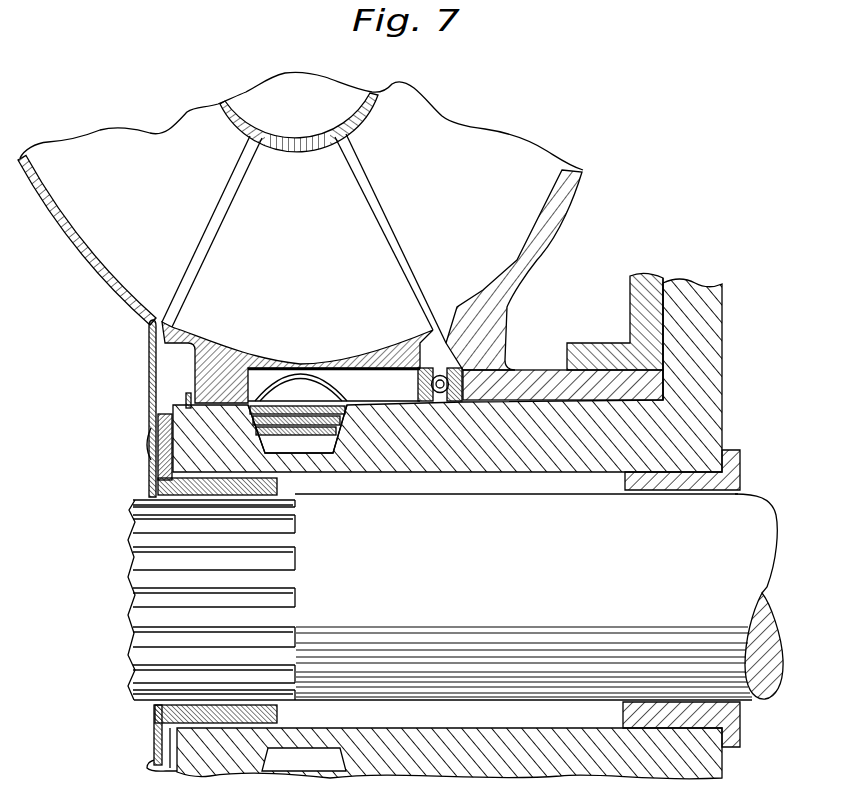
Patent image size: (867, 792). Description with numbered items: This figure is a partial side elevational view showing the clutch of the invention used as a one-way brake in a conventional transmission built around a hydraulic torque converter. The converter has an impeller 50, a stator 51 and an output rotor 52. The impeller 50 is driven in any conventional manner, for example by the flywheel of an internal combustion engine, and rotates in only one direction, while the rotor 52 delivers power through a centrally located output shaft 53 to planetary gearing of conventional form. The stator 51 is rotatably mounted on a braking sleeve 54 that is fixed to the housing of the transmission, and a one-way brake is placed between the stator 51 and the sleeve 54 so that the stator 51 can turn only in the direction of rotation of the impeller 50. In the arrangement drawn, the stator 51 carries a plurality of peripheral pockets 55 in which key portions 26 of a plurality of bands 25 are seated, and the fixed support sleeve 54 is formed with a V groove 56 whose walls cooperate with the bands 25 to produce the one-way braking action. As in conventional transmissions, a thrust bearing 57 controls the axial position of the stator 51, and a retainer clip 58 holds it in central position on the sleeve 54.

The bands 25 is at (300, 393).
The key portions 26 is at (277, 380).
The impeller 50 is at (550, 210).
The stator 51 is at (357, 233).
The output rotor 52 is at (80, 254).
The output shaft 53 is at (550, 607).
The braking sleeve 54 is at (703, 433).
The peripheral pockets 55 is at (333, 373).
The V groove 56 is at (308, 445).
The thrust bearing 57 is at (480, 363).
The retainer clip 58 is at (187, 400).